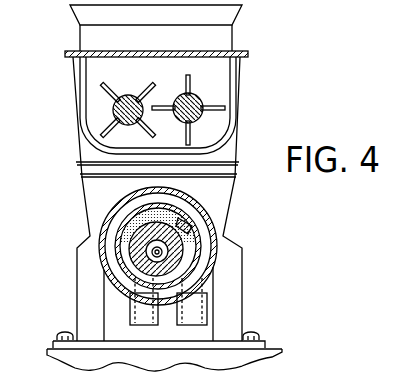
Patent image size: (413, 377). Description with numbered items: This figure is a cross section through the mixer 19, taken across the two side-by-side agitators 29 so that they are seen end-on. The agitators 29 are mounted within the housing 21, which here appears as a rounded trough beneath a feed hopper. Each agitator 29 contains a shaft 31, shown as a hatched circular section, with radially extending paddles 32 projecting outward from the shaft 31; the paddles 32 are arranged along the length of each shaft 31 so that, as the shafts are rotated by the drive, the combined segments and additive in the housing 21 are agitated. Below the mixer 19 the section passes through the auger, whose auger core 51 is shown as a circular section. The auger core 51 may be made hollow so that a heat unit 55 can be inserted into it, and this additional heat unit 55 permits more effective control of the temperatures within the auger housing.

The mixer 19 is at (74, 112).
The housing 21 is at (229, 100).
The agitators 29 is at (98, 96).
The shaft 31 is at (116, 112).
The paddles 32 is at (194, 75).
The auger core 51 is at (182, 246).
The heat unit 55 is at (150, 245).